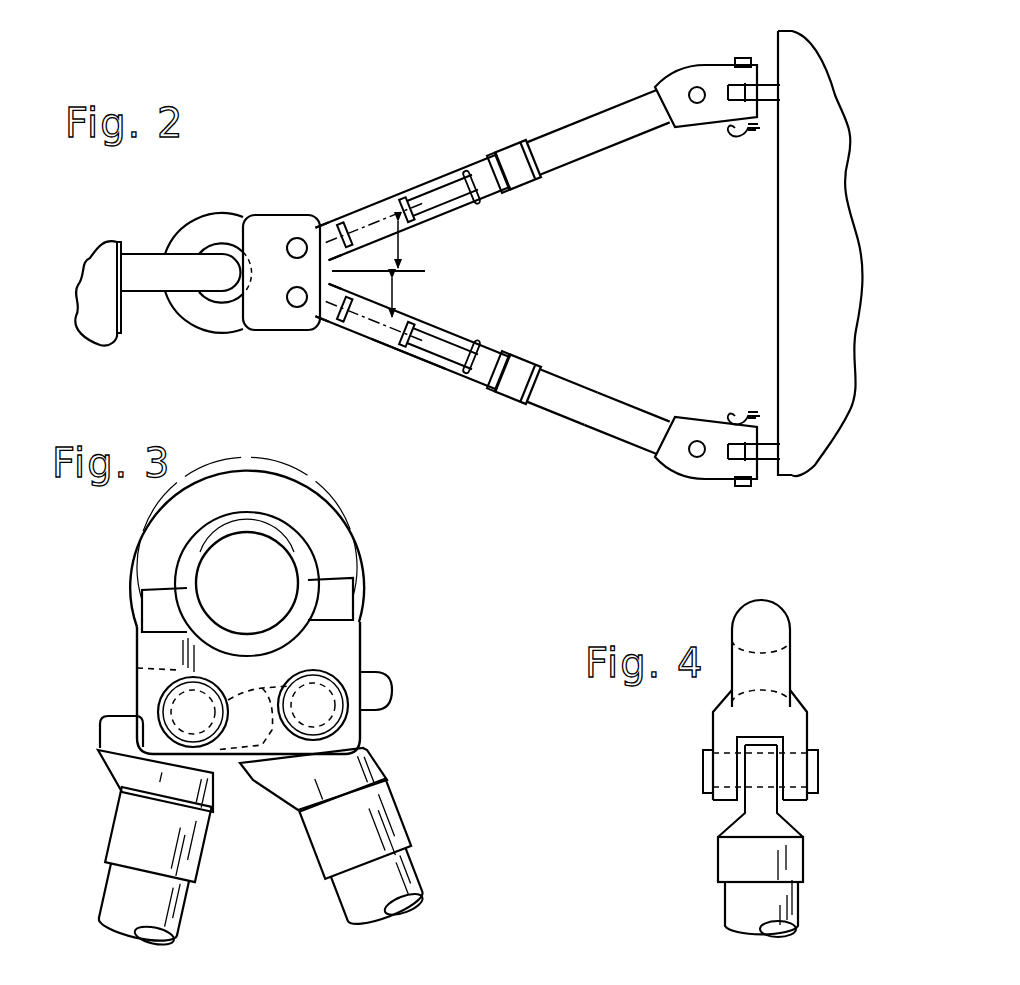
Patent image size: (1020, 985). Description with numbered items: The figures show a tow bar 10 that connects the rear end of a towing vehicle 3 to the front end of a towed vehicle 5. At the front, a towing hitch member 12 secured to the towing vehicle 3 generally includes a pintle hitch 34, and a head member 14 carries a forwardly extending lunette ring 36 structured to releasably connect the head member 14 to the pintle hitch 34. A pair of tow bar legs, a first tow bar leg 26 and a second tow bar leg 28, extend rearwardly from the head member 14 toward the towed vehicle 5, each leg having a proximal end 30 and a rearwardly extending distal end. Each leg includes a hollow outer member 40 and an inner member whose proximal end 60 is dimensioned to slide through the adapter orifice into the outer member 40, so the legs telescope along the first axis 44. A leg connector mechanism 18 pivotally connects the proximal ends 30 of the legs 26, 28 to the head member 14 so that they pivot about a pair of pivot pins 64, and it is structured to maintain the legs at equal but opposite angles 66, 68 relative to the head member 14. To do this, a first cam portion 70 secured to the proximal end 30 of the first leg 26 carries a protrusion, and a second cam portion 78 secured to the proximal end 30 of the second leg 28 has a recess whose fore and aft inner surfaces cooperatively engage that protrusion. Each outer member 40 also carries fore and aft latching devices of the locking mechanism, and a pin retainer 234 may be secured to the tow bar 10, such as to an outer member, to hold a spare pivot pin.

In FIG. 2, the towing vehicle 3 is at (94, 302).
In FIG. 2, the towed vehicle 5 is at (826, 253).
In FIG. 2, the tow bar 10 is at (469, 266).
In FIG. 3, the tow bar 10 is at (274, 702).
In FIG. 4, the tow bar 10 is at (743, 746).
In FIG. 2, the towing hitch member 12 is at (179, 256).
In FIG. 2, the head member 14 is at (238, 281).
In FIG. 3, the head member 14 is at (274, 605).
In FIG. 4, the head member 14 is at (743, 763).
In FIG. 2, the leg connector mechanism 18 is at (276, 197).
In FIG. 3, the leg connector mechanism 18 is at (295, 666).
In FIG. 4, the leg connector mechanism 18 is at (687, 757).
In FIG. 2, the first tow bar leg 26 is at (483, 371).
In FIG. 3, the first tow bar leg 26 is at (147, 832).
In FIG. 2, the second tow bar leg 28 is at (483, 173).
In FIG. 3, the second tow bar leg 28 is at (354, 836).
In FIG. 4, the proximal end 30 is at (798, 907).
In FIG. 2, the pintle hitch 34 is at (142, 284).
In FIG. 2, the lunette ring 36 is at (190, 232).
In FIG. 3, the lunette ring 36 is at (160, 538).
In FIG. 4, the lunette ring 36 is at (753, 622).
In FIG. 2, the hollow outer member 40 is at (433, 366).
In FIG. 2, the first axis 44 is at (383, 216).
In FIG. 2, the proximal end of inner member 60 is at (550, 379).
In FIG. 3, the pivot pins 64 is at (182, 716).
In FIG. 4, the pivot pins 64 is at (703, 780).
In FIG. 2, the angle 66 is at (401, 243).
In FIG. 2, the angle 68 is at (404, 300).
In FIG. 3, the first cam portion 70 is at (123, 776).
In FIG. 3, the second cam portion 78 is at (357, 767).
In FIG. 2, the pin retainer 234 is at (448, 339).